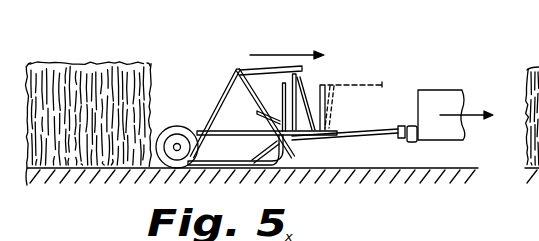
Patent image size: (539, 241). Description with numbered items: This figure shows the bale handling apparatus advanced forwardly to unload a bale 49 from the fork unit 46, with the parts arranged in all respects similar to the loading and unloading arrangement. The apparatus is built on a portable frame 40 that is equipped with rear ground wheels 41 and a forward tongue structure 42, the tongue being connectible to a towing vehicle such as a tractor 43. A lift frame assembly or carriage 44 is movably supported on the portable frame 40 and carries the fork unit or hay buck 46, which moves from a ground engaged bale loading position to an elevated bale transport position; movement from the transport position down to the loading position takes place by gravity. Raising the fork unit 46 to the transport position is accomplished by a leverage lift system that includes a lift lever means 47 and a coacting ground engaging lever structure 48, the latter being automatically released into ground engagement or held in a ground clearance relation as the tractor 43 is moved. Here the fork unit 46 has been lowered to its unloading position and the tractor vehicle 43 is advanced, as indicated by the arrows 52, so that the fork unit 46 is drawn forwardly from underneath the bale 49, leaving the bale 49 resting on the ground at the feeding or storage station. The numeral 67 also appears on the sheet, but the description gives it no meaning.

The portable frame 40 is at (242, 138).
The rear ground wheels 41 is at (170, 127).
The forward tongue structure 42 is at (377, 137).
The tractor 43 is at (453, 90).
The lift frame assembly 44 is at (275, 70).
The fork unit 46 is at (206, 169).
The lift lever means 47 is at (223, 74).
The ground engaging lever structure 48 is at (297, 163).
The bale 49 is at (100, 73).
The arrows 52 is at (476, 112).
The reference numeral 67 is at (339, 233).